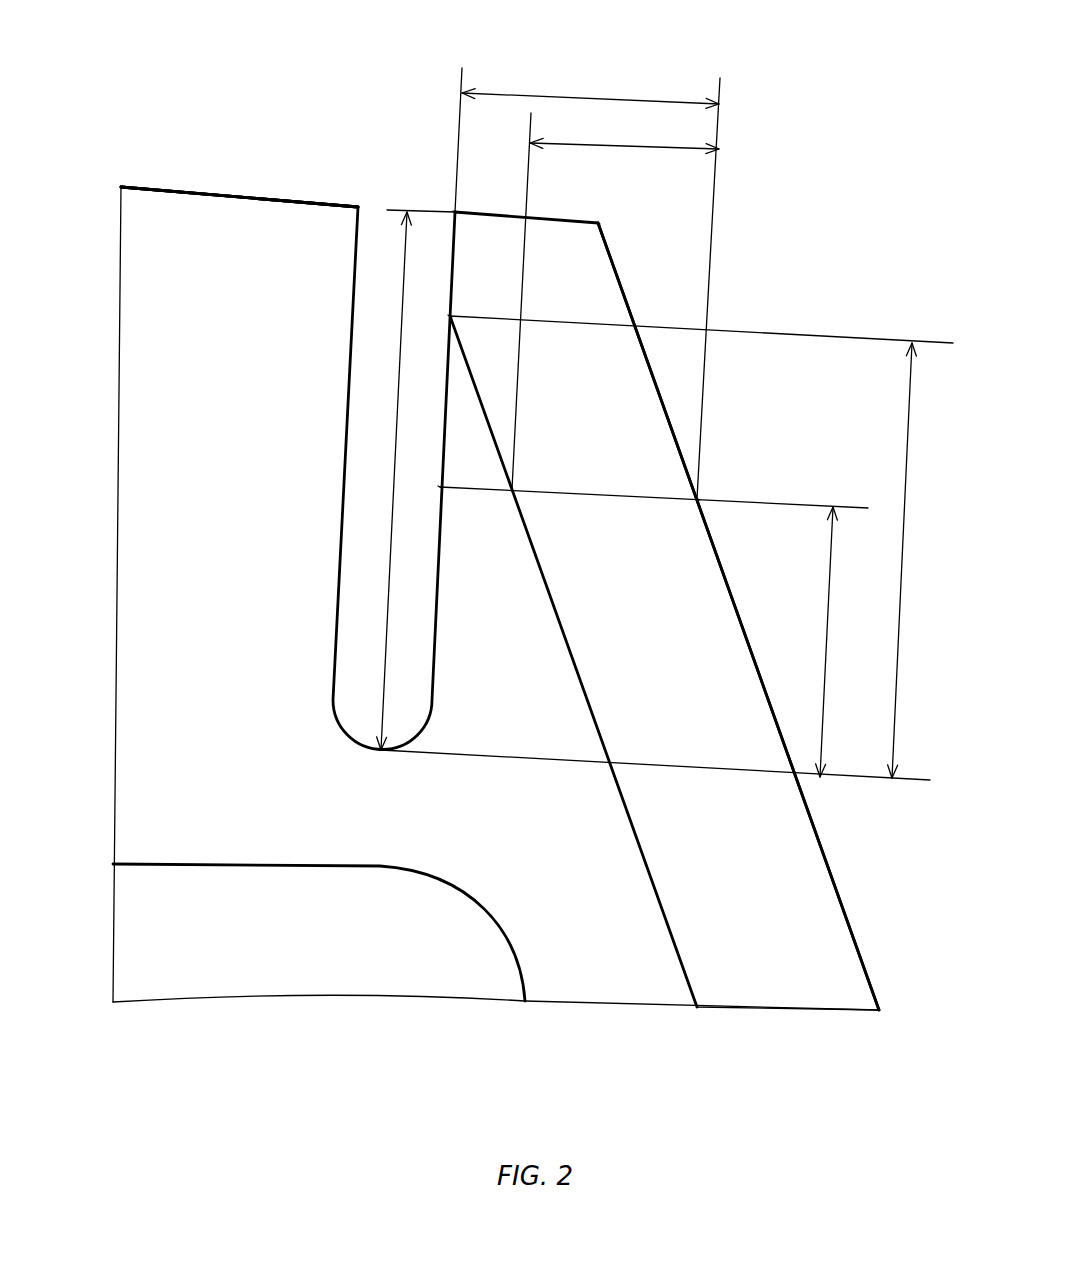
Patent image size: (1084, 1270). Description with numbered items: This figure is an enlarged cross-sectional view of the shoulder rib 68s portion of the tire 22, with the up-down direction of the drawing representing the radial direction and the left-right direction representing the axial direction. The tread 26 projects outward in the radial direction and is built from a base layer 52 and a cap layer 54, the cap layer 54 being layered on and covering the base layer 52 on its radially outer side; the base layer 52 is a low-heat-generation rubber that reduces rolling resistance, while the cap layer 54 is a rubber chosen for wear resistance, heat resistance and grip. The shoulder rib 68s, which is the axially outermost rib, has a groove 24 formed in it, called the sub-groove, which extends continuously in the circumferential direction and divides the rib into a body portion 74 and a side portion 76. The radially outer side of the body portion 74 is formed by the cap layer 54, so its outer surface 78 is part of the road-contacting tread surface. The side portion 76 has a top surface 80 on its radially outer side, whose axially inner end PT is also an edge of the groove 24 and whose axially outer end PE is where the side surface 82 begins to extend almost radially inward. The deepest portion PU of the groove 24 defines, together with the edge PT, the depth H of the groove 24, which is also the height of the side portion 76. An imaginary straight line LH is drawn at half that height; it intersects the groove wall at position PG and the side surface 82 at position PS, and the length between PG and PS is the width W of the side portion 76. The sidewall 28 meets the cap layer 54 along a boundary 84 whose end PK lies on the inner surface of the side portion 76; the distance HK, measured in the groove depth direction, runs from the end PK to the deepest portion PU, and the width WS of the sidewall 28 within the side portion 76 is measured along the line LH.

The tire 22 is at (698, 599).
The groove 24 is at (360, 220).
The tread 26 is at (142, 167).
The sidewall 28 is at (813, 922).
The base layer 52 is at (145, 917).
The cap layer 54 is at (150, 352).
The shoulder rib 68s is at (270, 157).
The body portion 74 is at (175, 213).
The side portion 76 is at (625, 280).
The outer surface 78 is at (227, 193).
The top surface 80 is at (537, 217).
The side surface 82 is at (827, 853).
The boundary 84 is at (667, 923).
The inner end PT is at (453, 212).
The outer end PE is at (598, 223).
The end of boundary PK is at (449, 318).
The position on wall surface PG is at (440, 487).
The position on side surface PS is at (700, 500).
The deepest portion PU is at (378, 755).
The width of side portion W is at (587, 283).
The width of sidewall WS is at (615, 301).
The depth of sub-groove H is at (411, 480).
The distance HK is at (667, 548).
The imaginary straight line LH is at (760, 497).